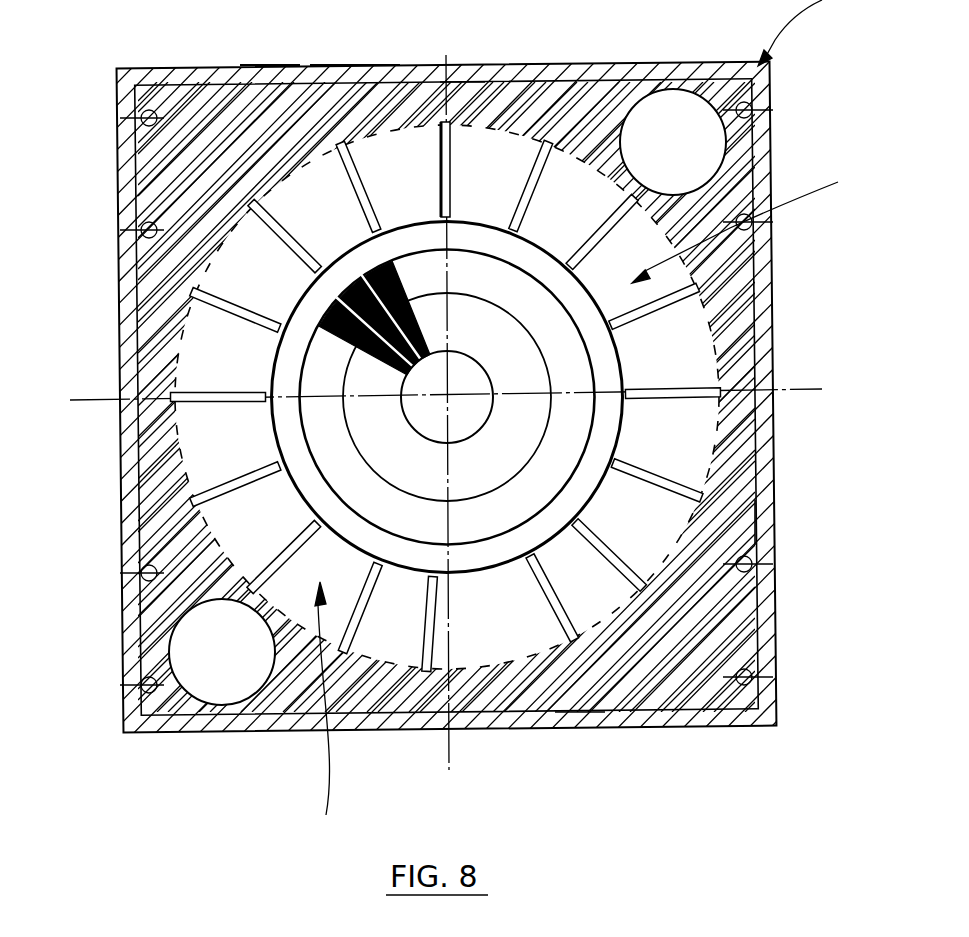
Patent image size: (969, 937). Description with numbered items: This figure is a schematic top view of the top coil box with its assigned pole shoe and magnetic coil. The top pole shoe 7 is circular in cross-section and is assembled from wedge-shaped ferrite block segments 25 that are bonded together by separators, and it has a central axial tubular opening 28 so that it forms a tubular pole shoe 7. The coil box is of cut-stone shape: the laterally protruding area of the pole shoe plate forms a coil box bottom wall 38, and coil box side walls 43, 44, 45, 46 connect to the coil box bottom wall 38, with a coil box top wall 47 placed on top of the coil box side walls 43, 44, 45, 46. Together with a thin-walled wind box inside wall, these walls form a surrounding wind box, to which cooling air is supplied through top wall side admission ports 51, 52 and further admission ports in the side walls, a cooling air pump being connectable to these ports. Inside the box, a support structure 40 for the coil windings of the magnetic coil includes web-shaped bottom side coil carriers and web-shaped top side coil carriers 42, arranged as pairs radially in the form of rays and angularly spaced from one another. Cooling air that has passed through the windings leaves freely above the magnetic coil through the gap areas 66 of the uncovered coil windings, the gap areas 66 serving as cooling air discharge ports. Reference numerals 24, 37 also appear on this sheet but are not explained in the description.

The pole shoe 7 is at (529, 471).
The housing part 24 is at (338, 32).
The ferrite block segments 25 is at (420, 293).
The axial tubular opening 28 is at (461, 426).
The housing part 37 is at (380, 32).
The coil box bottom wall 38 is at (270, 32).
The support structure 40 is at (678, 616).
The top side coil carriers 42 is at (664, 306).
The coil box side wall 43 is at (121, 305).
The coil box side wall 44 is at (462, 62).
The coil box side wall 45 is at (773, 521).
The coil box side wall 46 is at (578, 722).
The coil box top wall 47 is at (192, 165).
The top wall side admission port 51 is at (227, 677).
The top wall side admission port 52 is at (676, 147).
The gap areas 66 is at (580, 500).